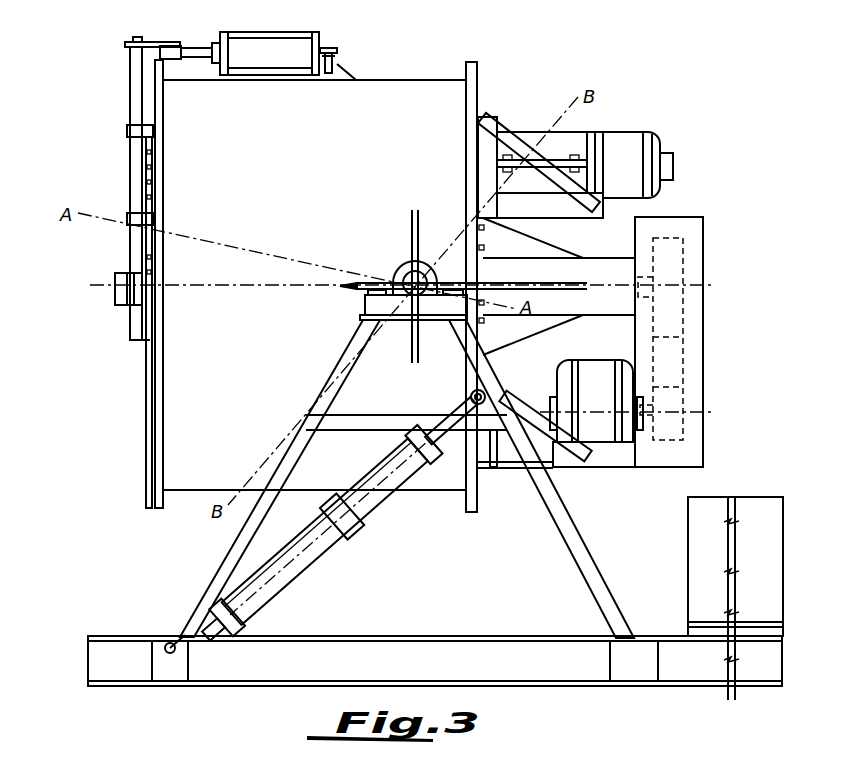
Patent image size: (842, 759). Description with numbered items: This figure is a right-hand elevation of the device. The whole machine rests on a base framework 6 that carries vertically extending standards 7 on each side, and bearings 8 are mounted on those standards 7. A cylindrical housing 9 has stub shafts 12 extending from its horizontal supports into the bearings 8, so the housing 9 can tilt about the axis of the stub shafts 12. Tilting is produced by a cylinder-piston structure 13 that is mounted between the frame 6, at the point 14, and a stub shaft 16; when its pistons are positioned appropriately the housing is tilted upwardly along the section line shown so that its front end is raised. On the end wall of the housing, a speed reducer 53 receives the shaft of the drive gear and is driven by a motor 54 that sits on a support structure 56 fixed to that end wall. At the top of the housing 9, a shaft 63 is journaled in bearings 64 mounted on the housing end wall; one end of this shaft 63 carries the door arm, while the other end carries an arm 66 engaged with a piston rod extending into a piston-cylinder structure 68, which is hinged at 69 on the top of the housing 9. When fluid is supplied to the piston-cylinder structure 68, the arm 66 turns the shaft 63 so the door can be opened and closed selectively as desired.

The base framework 6 is at (464, 637).
The vertically extending standards 7 is at (233, 542).
The bearings 8 is at (365, 305).
The cylindrical housing 9 is at (403, 80).
The stub shafts 12 is at (408, 276).
The cylinder-piston structure 13 is at (309, 565).
The mounting point on frame 14 is at (167, 654).
The stub shaft 16 is at (489, 392).
The speed reducer 53 is at (577, 131).
The motor 54 is at (637, 133).
The support structure 56 is at (509, 132).
The shaft 63 is at (132, 86).
The bearings 64 is at (128, 131).
The arm 66 is at (157, 44).
The piston-cylinder structure 68 is at (266, 34).
The hinge 69 is at (342, 62).